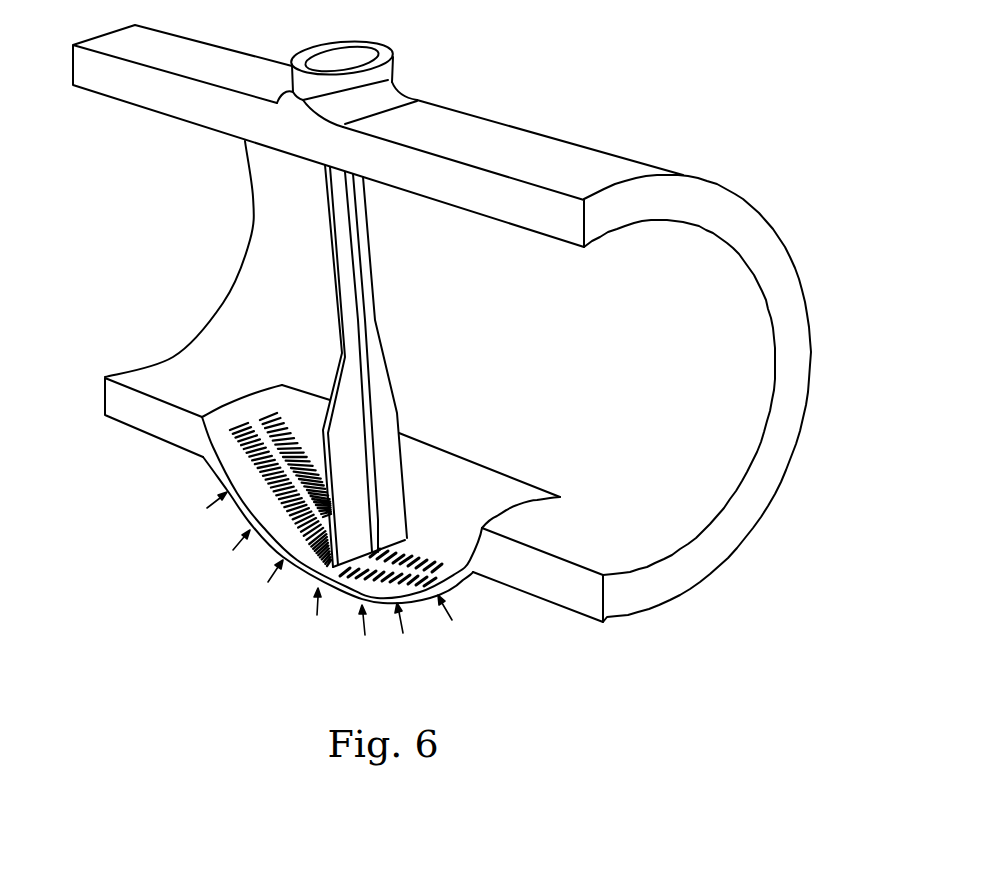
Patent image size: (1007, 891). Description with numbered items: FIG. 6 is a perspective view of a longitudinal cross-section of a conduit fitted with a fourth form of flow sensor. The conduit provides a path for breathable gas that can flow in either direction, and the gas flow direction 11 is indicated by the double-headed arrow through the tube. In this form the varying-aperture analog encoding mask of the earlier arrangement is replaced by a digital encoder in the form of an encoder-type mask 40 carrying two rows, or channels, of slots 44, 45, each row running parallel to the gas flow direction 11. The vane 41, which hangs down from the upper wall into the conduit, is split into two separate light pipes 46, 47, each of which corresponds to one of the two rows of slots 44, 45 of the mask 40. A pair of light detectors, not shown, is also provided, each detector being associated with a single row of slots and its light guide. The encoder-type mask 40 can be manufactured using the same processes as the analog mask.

The gas flow direction 11 is at (690, 390).
The encoder-type mask 40 is at (235, 487).
The vane 41 is at (360, 366).
The row of slots 44 is at (415, 560).
The row of slots 45 is at (237, 448).
The light pipe 46 is at (368, 285).
The light pipe 47 is at (343, 288).